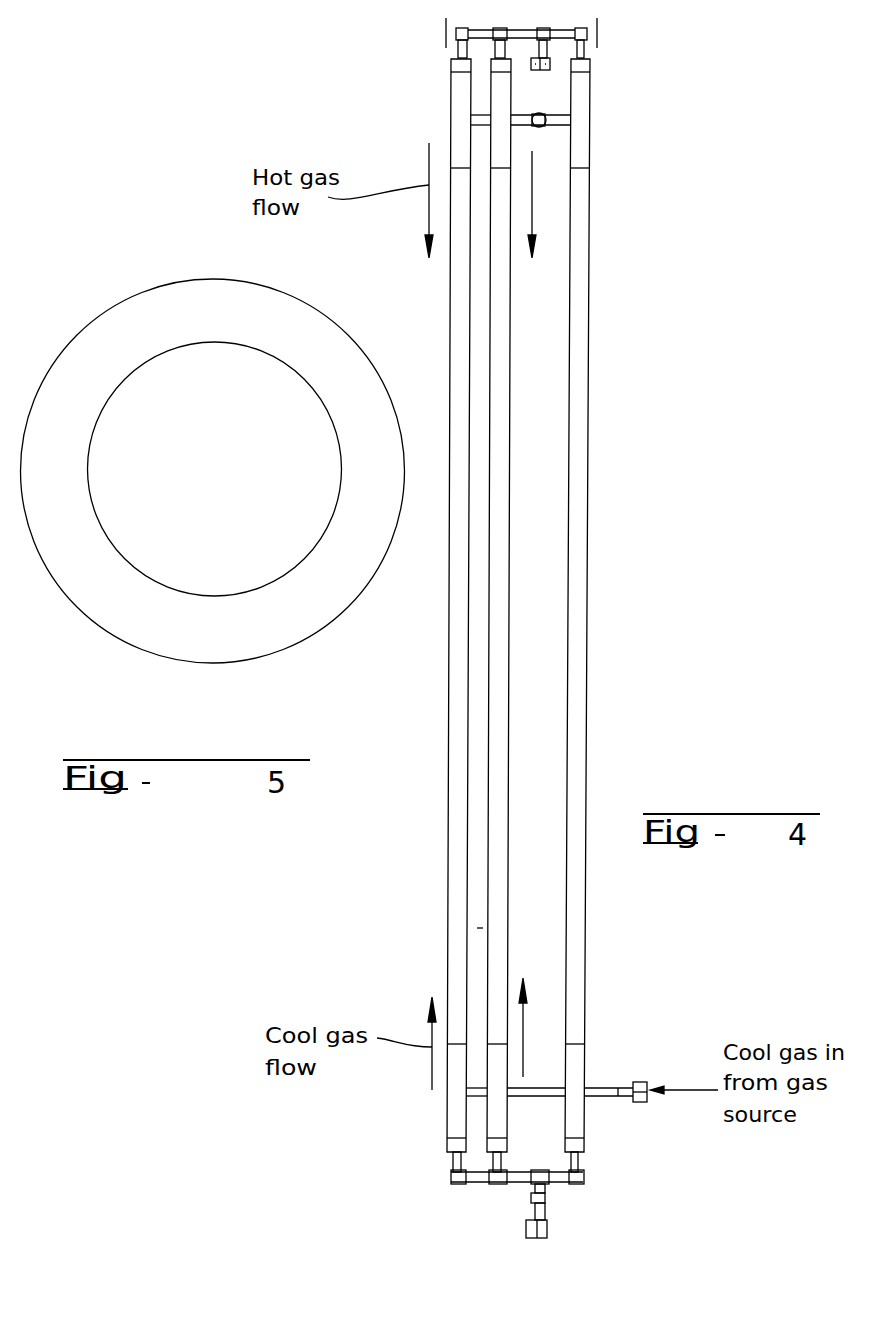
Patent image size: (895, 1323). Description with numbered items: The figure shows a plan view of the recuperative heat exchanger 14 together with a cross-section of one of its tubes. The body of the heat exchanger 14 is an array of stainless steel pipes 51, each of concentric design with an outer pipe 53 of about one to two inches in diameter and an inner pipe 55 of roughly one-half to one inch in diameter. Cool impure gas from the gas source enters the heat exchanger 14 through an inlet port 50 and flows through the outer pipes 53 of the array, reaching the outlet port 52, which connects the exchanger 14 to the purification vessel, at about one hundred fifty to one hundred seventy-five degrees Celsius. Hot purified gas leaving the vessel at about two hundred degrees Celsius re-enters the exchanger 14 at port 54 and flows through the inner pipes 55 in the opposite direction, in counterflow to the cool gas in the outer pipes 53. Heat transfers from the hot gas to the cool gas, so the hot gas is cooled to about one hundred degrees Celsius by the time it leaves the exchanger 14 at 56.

In FIG. 4, the recuperative heat exchanger 14 is at (521, 606).
In FIG. 4, the inlet port 50 is at (640, 1082).
In FIG. 4, the pipe 51 is at (428, 903).
In FIG. 5, the pipe 51 is at (213, 503).
In FIG. 4, the outlet port 52 is at (545, 128).
In FIG. 5, the outer pipe 53 is at (148, 648).
In FIG. 4, the port 54 is at (548, 72).
In FIG. 5, the inner pipe 55 is at (120, 555).
In FIG. 4, the outlet 56 is at (537, 1238).